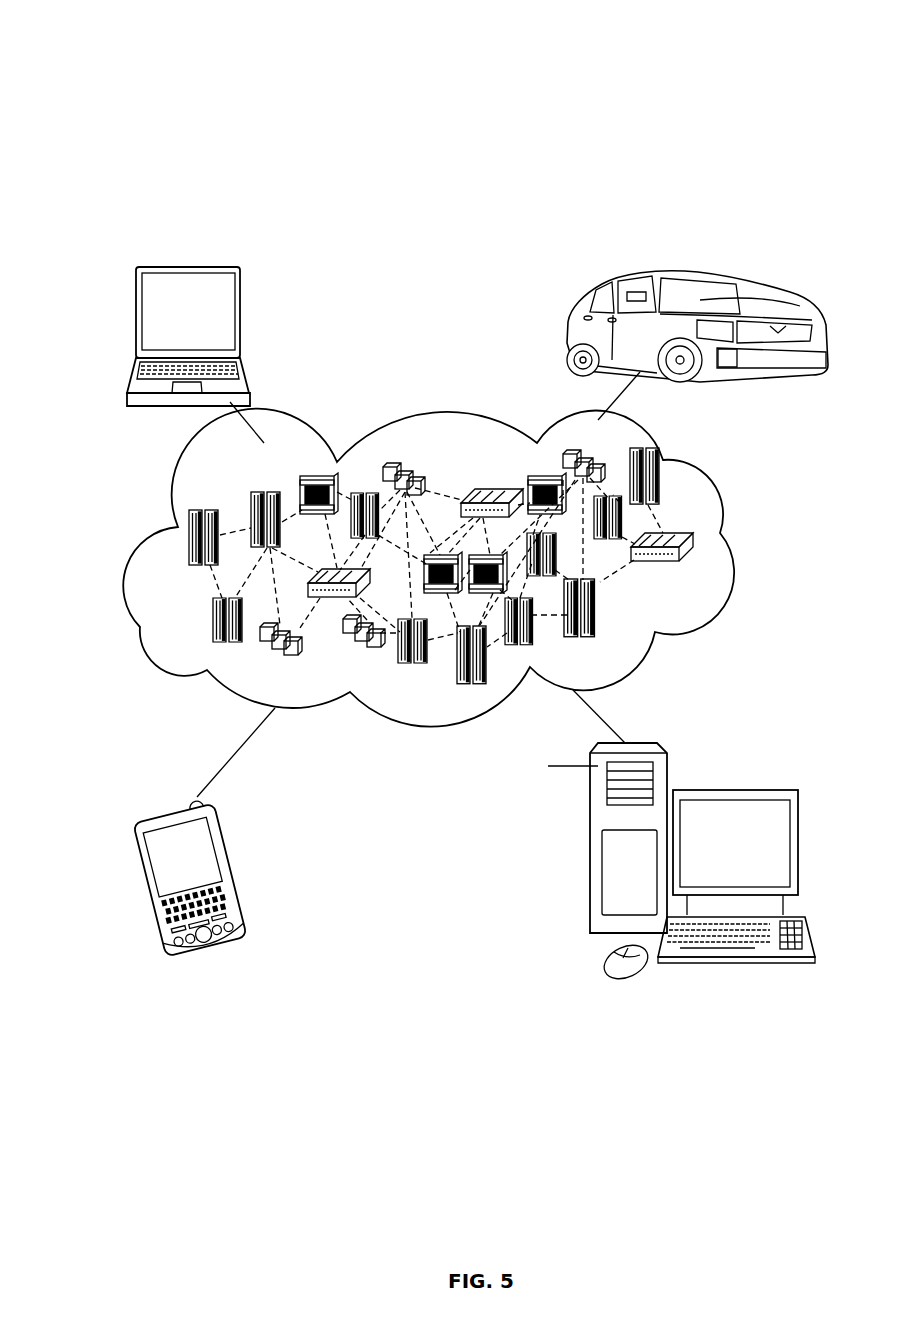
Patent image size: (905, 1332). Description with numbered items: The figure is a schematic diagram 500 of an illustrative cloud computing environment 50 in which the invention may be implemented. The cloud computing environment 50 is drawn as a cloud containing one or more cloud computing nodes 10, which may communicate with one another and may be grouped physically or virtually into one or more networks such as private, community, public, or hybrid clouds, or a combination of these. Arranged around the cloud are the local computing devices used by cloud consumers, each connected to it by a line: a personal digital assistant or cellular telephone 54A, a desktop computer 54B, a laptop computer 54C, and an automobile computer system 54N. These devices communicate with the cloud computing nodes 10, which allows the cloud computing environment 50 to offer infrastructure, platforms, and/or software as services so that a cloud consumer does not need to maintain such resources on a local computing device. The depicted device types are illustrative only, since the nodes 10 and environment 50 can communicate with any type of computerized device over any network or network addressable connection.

The cloud computing environment system 500 is at (82, 60).
The cloud computing environment 50 is at (733, 549).
The cloud computing node 10 is at (702, 580).
The personal digital assistant or cellular telephone 54A is at (232, 869).
The desktop computer 54B is at (733, 790).
The laptop computer 54C is at (240, 320).
The automobile computer system 54N is at (568, 328).